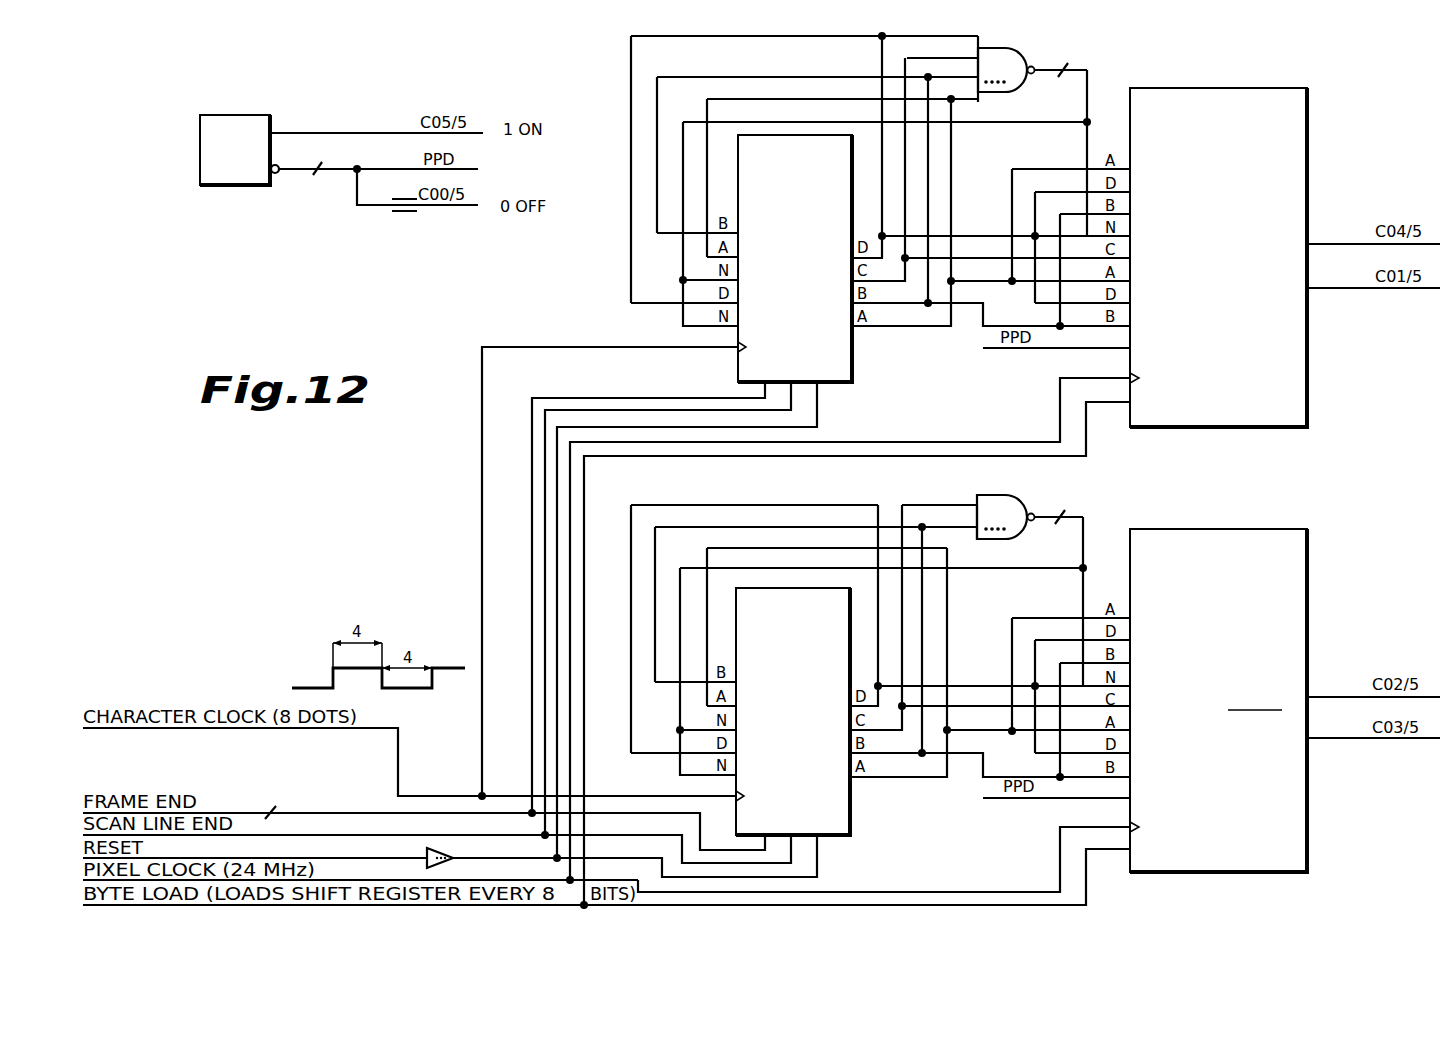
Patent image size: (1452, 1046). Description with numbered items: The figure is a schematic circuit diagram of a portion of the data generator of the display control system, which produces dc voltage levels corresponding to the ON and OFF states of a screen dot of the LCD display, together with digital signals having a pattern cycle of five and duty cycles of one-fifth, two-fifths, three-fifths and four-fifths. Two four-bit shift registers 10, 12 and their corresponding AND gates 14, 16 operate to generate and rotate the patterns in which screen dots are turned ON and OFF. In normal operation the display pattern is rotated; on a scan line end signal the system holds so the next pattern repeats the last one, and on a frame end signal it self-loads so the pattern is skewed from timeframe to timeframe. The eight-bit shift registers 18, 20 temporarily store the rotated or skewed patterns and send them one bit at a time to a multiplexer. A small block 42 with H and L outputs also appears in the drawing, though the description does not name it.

The 4-bit shift register 10 is at (852, 353).
The 4-bit shift register 12 is at (850, 815).
The AND gate 14 is at (1014, 50).
The AND gate 16 is at (1014, 497).
The 8 bit shift register 18 is at (1310, 133).
The 8 bit shift register 20 is at (1310, 575).
The latch 42 is at (270, 115).